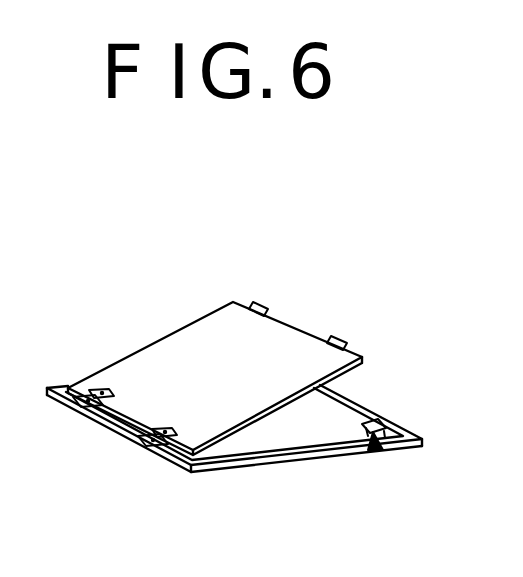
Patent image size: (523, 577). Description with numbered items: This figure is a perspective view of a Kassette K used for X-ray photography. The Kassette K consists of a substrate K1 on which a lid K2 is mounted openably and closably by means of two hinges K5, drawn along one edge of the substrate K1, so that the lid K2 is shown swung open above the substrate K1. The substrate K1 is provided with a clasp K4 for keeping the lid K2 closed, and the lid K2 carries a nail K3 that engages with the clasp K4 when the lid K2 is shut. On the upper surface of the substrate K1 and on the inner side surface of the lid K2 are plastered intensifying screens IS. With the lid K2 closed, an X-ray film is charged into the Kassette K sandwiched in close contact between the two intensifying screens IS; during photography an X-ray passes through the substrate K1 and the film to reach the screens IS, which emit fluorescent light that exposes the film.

The Kassette K is at (297, 307).
The substrate K1 is at (262, 462).
The lid K2 is at (132, 373).
The nail K3 is at (340, 334).
The clasp K4 is at (373, 418).
The hinges K5 is at (90, 417).
The intensifying screens IS is at (211, 352).